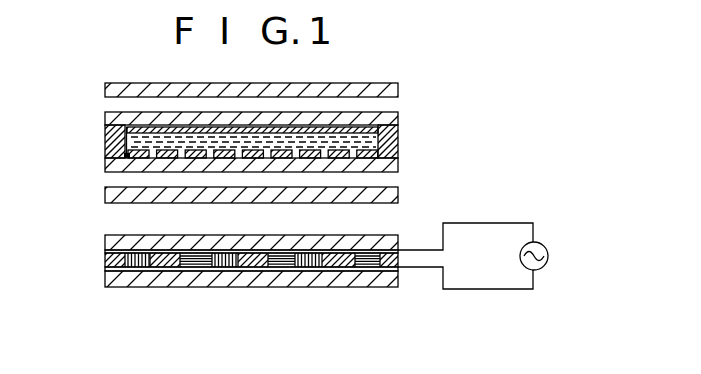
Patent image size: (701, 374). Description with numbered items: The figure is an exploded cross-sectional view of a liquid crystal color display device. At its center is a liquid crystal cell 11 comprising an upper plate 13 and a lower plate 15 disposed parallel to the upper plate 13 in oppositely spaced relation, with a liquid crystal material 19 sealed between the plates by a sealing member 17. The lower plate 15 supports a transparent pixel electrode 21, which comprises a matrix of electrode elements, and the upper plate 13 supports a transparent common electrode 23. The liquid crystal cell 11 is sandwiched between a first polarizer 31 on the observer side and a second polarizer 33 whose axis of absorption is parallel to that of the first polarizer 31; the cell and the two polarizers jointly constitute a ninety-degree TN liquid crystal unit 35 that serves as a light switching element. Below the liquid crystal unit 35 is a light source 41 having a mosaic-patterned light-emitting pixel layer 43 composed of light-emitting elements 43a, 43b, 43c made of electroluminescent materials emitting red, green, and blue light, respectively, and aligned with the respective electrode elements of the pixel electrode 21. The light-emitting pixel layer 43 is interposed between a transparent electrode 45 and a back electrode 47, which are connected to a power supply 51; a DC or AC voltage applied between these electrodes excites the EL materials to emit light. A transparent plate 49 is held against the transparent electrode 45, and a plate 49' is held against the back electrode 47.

The liquid crystal cell 11 is at (350, 187).
The upper plate 13 is at (399, 114).
The lower plate 15 is at (443, 105).
The sealing member 17 is at (108, 129).
The liquid crystal material 19 is at (381, 141).
The transparent pixel electrode 21 is at (126, 157).
The transparent common electrode 23 is at (113, 112).
The first polarizer 31 is at (399, 91).
The second polarizer 33 is at (478, 75).
The liquid crystal unit 35 is at (350, 187).
The light source 41 is at (350, 187).
The light-emitting pixel layer 43 is at (284, 233).
The light-emitting element 43a is at (141, 267).
The light-emitting element 43b is at (171, 267).
The light-emitting element 43c is at (118, 314).
The transparent electrode 45 is at (105, 252).
The back electrode 47 is at (105, 269).
The transparent plate 49 is at (350, 187).
The plate 49' is at (350, 187).
The power supply 51 is at (548, 259).